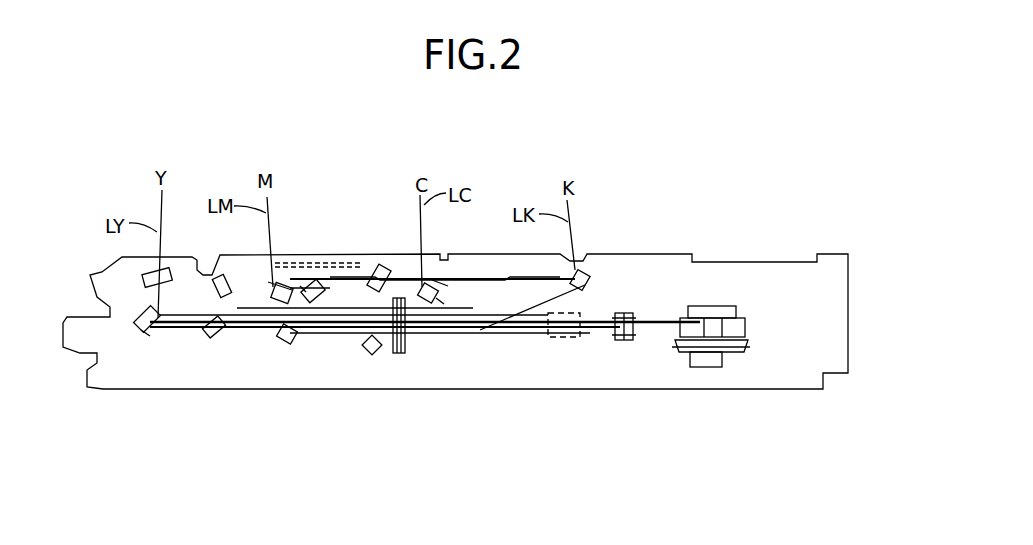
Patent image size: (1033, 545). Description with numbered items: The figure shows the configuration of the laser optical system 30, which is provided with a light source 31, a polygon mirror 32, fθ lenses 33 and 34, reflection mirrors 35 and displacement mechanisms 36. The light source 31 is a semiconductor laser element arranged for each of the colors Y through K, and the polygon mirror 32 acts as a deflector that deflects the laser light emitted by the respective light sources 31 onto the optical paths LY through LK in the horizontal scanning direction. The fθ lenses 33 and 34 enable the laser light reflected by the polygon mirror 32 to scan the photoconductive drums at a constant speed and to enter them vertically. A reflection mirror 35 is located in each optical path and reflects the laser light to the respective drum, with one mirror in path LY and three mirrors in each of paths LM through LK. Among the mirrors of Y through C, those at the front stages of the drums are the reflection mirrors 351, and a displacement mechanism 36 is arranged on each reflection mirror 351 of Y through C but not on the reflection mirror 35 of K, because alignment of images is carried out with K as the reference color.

The laser optical system 30 is at (732, 186).
The light source 31 is at (557, 340).
The polygon mirror 32 is at (742, 422).
The fθ lens 33 is at (617, 340).
The fθ lens 34 is at (402, 352).
The reflection mirror 35 is at (421, 288).
The reflection mirror 351 is at (276, 287).
The displacement mechanism 36 is at (298, 288).